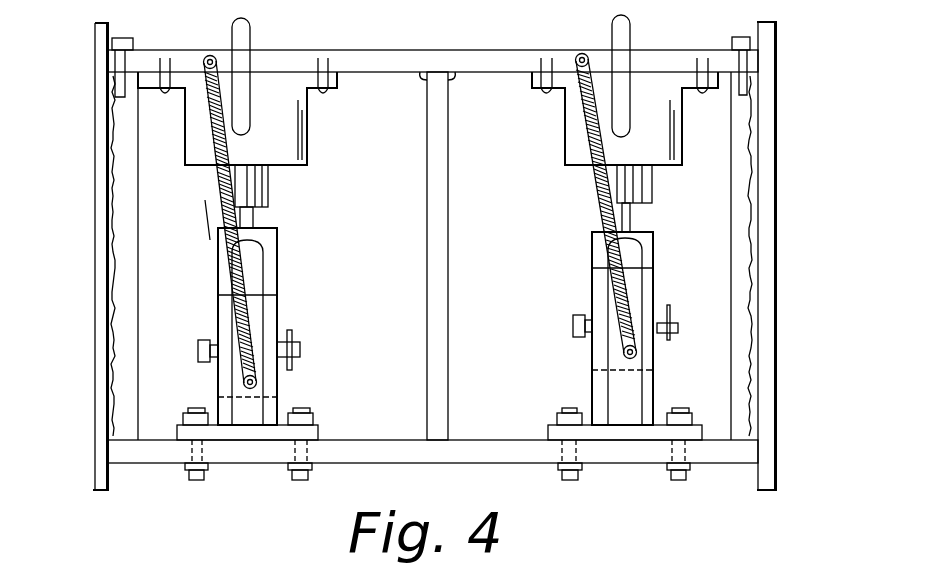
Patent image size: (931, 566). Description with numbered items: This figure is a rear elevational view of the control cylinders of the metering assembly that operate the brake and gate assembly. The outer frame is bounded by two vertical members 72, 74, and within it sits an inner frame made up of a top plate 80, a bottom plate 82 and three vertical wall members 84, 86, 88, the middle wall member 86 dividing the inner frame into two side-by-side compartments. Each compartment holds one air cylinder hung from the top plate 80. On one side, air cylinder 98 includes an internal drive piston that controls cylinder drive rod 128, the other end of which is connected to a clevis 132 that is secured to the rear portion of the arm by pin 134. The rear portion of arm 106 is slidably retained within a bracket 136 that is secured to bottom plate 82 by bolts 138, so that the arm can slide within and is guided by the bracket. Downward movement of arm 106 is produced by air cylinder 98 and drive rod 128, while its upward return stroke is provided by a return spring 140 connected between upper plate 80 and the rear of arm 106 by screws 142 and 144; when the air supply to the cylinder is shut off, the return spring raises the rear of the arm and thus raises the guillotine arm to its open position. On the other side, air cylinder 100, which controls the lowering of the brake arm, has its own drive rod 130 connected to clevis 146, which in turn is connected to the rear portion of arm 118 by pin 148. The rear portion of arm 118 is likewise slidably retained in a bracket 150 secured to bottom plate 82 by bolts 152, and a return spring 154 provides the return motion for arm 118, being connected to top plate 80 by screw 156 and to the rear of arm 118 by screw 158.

The vertical member 72 is at (767, 287).
The vertical member 74 is at (98, 263).
The top plate 80 is at (398, 60).
The bottom plate 82 is at (492, 448).
The vertical wall member 84 is at (745, 215).
The vertical wall member 86 is at (440, 235).
The vertical wall member 88 is at (118, 198).
The air cylinder 98 is at (310, 117).
The air cylinder 100 is at (565, 140).
The arm 106 is at (297, 370).
The arm 118 is at (640, 370).
The cylinder drive rod 128 is at (255, 217).
The drive rod 130 is at (627, 213).
The clevis 132 is at (257, 307).
The pin 134 is at (293, 345).
The bracket 136 is at (217, 382).
The bolts 138 is at (313, 413).
The return spring 140 is at (208, 221).
The screw 142 is at (209, 55).
The screw 144 is at (257, 383).
The clevis 146 is at (633, 280).
The pin 148 is at (672, 320).
The bracket 150 is at (598, 290).
The bolts 152 is at (567, 410).
The return spring 154 is at (597, 195).
The screw 156 is at (580, 53).
The screw 158 is at (636, 350).